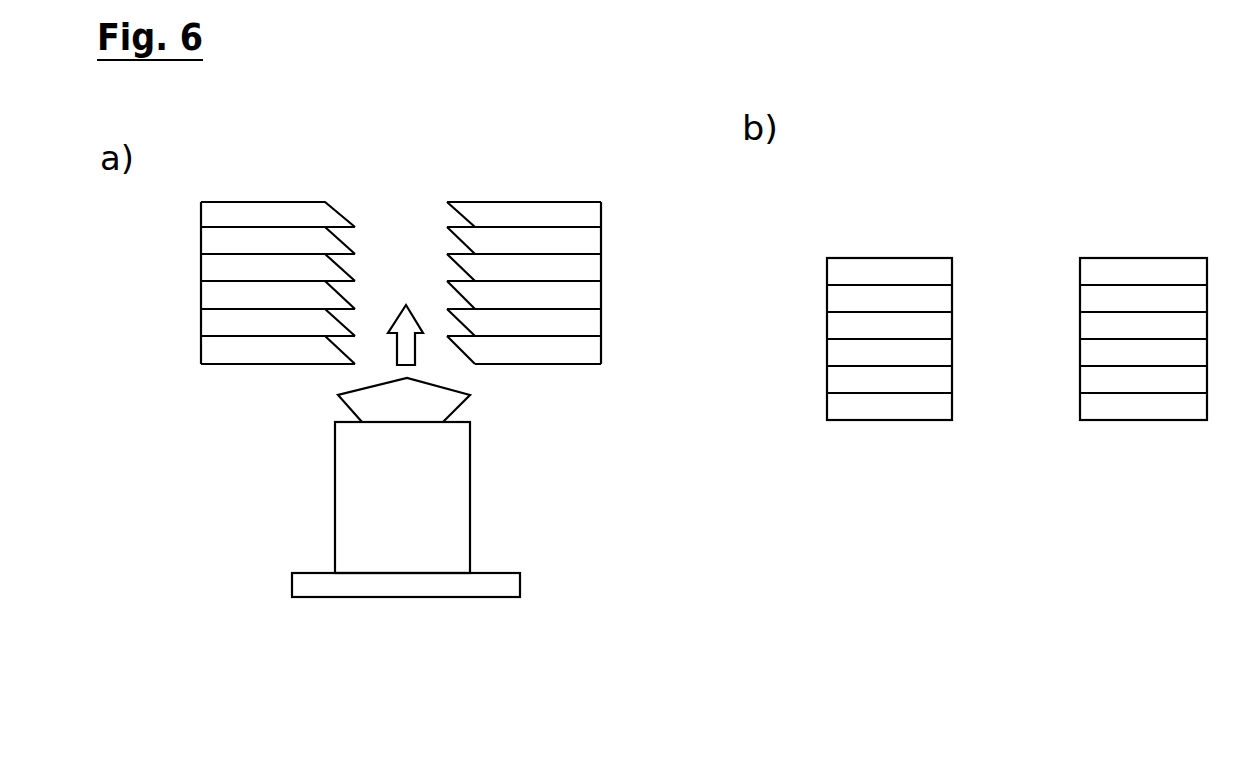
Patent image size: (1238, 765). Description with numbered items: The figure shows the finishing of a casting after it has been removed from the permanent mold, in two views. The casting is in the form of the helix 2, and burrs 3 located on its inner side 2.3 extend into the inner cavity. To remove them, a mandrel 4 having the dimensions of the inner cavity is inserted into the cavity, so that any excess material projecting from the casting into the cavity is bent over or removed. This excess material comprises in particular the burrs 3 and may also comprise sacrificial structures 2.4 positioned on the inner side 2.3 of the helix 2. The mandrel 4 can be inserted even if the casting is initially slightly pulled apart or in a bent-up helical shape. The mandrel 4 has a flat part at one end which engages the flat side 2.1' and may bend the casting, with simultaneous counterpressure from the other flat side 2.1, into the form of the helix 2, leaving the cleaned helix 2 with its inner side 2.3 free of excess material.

The helix 2 is at (704, 273).
The flat side 2.1 is at (704, 280).
The flat side 2.1' is at (704, 423).
The inner side 2.3 is at (350, 192).
The sacrificial structures 2.4 is at (464, 203).
The burrs 3 is at (358, 281).
The mandrel 4 is at (452, 500).